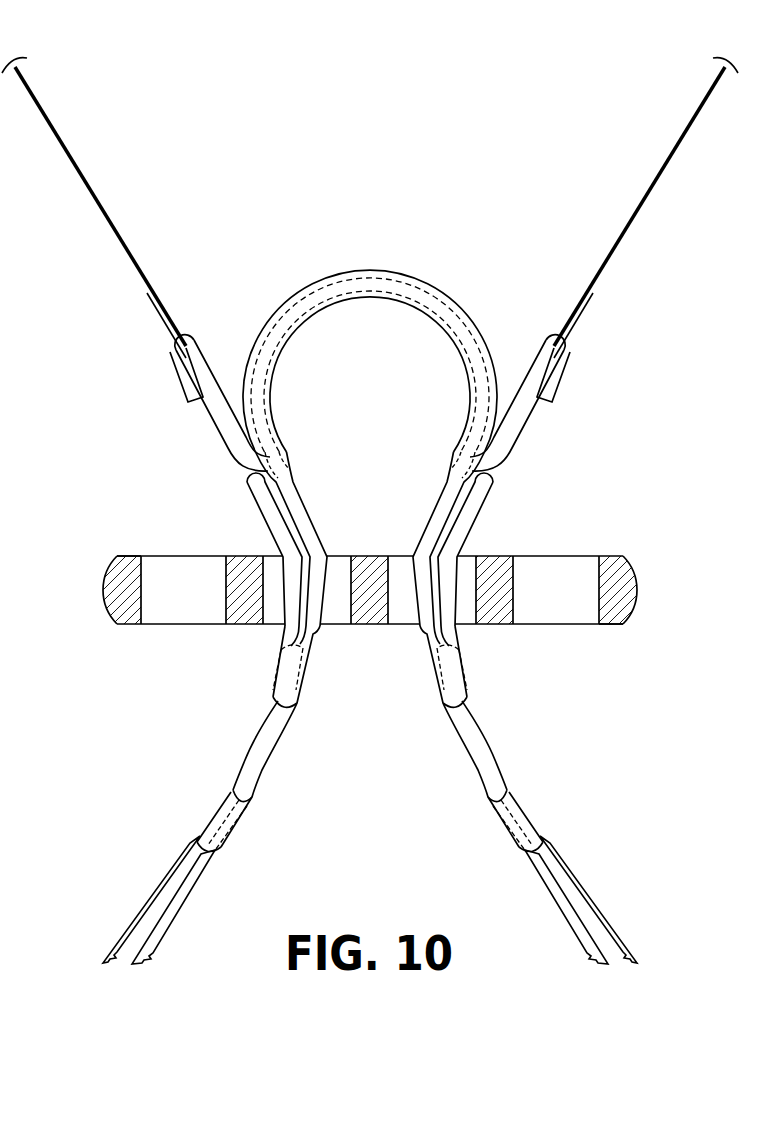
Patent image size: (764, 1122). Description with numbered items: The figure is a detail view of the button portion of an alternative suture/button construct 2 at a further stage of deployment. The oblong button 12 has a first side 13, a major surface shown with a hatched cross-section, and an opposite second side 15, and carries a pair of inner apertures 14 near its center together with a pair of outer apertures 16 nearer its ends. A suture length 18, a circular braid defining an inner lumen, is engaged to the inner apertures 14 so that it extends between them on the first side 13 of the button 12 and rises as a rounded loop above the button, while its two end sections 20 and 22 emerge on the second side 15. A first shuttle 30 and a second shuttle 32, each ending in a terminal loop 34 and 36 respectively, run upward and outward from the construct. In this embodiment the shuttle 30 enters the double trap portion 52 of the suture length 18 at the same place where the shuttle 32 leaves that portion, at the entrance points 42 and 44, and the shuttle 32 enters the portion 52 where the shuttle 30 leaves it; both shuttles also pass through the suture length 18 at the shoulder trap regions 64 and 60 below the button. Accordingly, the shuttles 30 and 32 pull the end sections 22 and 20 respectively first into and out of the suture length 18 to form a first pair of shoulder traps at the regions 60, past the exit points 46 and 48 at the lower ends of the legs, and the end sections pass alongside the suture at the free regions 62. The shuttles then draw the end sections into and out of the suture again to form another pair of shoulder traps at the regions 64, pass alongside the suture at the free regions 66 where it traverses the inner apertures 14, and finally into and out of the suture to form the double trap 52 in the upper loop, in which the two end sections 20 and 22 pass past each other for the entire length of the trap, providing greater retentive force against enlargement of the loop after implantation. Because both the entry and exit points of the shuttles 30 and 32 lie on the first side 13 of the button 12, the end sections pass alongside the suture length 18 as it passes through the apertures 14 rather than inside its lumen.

The implant system 2 is at (2, 590).
The oblong button 12 is at (640, 590).
The first side 13 is at (135, 556).
The inner apertures 14 is at (337, 555).
The second side 15 is at (617, 625).
The outer apertures 16 is at (188, 608).
The suture length 18 is at (334, 270).
The suture end section 20 is at (558, 382).
The suture end section 22 is at (178, 382).
The first shuttle 30 is at (76, 176).
The second shuttle 32 is at (665, 176).
The terminal loop 34 is at (160, 328).
The terminal loop 36 is at (580, 328).
The entrance point 42 is at (283, 458).
The entrance point 44 is at (455, 458).
The exit point 46 is at (540, 838).
The exit point 48 is at (197, 838).
The double trap portion 52 is at (403, 270).
The shoulder trap regions 60 is at (245, 822).
The free regions 62 is at (237, 745).
The shoulder trap regions 64 is at (300, 678).
The free regions 66 is at (258, 509).